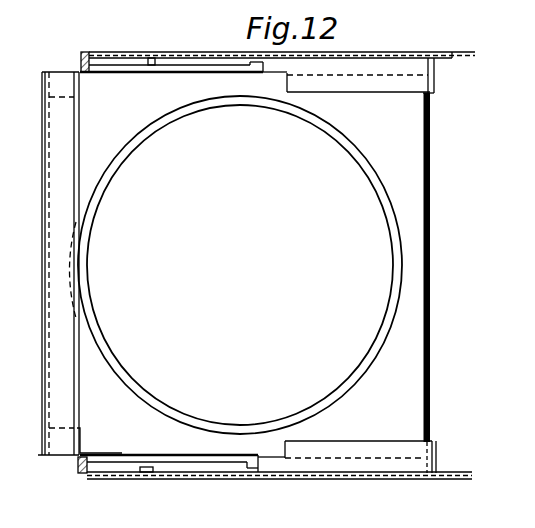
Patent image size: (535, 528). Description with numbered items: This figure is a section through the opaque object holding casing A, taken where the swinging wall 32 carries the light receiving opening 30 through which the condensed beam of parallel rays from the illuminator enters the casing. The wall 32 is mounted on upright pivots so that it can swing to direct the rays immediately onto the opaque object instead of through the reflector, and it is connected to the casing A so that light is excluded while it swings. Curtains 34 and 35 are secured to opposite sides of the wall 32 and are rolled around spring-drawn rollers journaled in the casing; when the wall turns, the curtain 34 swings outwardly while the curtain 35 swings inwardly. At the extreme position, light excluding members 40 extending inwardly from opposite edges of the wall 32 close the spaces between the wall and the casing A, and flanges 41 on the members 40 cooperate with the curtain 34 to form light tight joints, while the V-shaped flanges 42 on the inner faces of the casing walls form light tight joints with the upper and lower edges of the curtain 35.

The light receiving opening 30 is at (172, 410).
The wall or member 32 is at (381, 391).
The curtain 34 is at (88, 393).
The curtain 35 is at (428, 390).
The light excluding member 40 is at (183, 73).
The flange 41 is at (116, 435).
The channel member 42 is at (362, 85).
The casing A is at (452, 82).